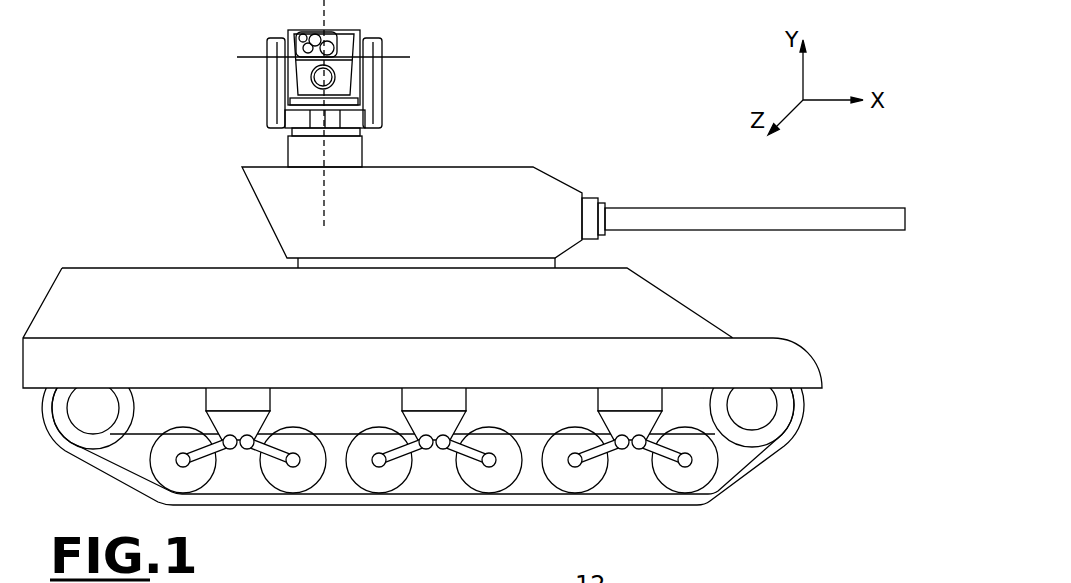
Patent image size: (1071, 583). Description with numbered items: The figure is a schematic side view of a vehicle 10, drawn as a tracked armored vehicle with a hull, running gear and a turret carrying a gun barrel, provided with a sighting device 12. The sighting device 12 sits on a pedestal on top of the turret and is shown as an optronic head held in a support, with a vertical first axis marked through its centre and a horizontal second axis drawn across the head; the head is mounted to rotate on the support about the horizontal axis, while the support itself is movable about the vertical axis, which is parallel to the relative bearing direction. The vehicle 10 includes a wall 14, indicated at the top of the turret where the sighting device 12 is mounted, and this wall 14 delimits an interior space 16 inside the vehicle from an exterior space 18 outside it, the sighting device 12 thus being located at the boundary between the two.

The vehicle 10 is at (496, 138).
The sighting device 12 is at (236, 37).
The wall 14 is at (392, 167).
The interior space 16 is at (300, 203).
The exterior space 18 is at (144, 127).